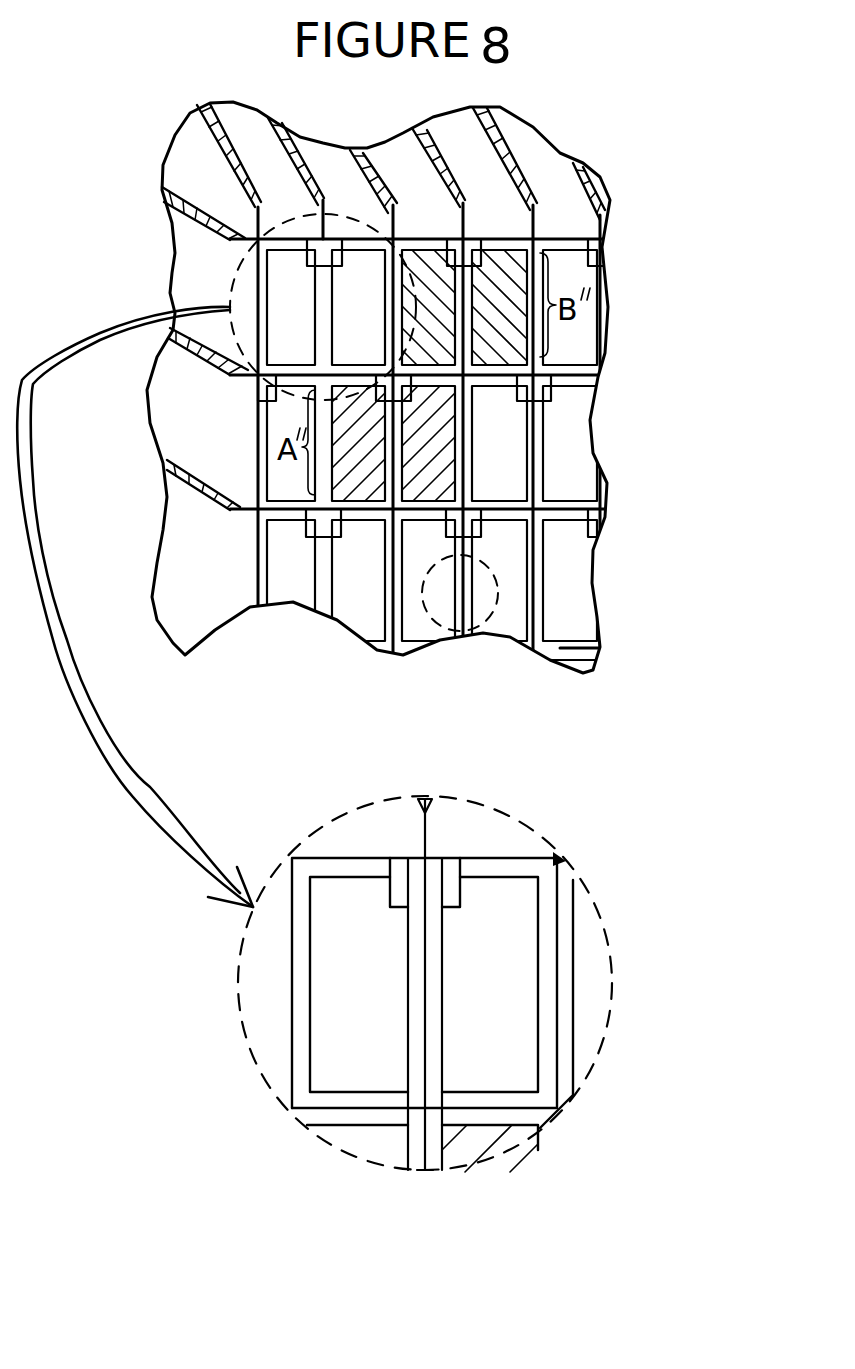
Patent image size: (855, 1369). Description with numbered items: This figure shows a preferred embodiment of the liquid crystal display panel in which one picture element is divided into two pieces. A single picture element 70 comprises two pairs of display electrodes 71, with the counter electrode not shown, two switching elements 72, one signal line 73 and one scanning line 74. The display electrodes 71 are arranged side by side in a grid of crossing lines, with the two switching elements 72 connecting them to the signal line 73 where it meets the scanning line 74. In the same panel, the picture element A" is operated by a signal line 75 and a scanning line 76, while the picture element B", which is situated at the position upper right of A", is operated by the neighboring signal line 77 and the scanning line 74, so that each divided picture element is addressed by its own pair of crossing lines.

The picture element 70 is at (497, 613).
The display electrodes 71 is at (424, 984).
The switching elements 72 is at (388, 890).
The signal line 73 is at (318, 153).
The scanning line 74 is at (204, 221).
The signal line 75 is at (397, 177).
The scanning line 76 is at (200, 353).
The signal line 77 is at (443, 153).